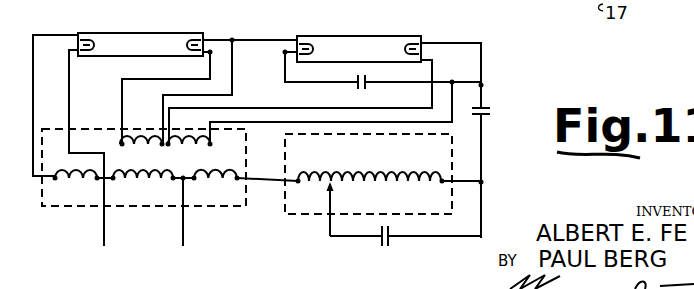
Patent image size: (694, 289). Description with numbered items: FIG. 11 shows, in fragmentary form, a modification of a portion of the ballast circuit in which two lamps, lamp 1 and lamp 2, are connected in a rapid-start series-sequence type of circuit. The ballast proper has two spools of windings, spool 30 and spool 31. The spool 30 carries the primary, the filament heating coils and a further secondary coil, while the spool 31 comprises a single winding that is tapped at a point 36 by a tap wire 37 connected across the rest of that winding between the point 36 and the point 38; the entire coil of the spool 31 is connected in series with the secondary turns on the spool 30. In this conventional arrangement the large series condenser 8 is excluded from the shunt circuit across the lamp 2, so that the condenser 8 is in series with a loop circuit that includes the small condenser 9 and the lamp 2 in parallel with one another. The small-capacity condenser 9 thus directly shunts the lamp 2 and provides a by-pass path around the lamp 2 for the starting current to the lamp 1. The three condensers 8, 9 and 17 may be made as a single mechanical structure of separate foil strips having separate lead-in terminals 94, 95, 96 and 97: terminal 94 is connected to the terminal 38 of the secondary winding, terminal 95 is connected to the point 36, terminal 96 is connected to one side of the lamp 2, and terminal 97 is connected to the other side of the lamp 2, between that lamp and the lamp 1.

The lamp 1 is at (148, 33).
The lamp 2 is at (362, 36).
The series condenser 8 is at (490, 112).
The small condenser 9 is at (367, 90).
The condenser 17 is at (385, 246).
The spool of windings 30 is at (60, 208).
The spool of windings 31 is at (453, 152).
The tap point 36 is at (334, 188).
The tap wire 37 is at (330, 226).
The terminal of the secondary winding 38 is at (483, 185).
The terminal 94 is at (442, 237).
The terminal 95 is at (356, 237).
The terminal 96 is at (484, 86).
The terminal 97 is at (306, 84).